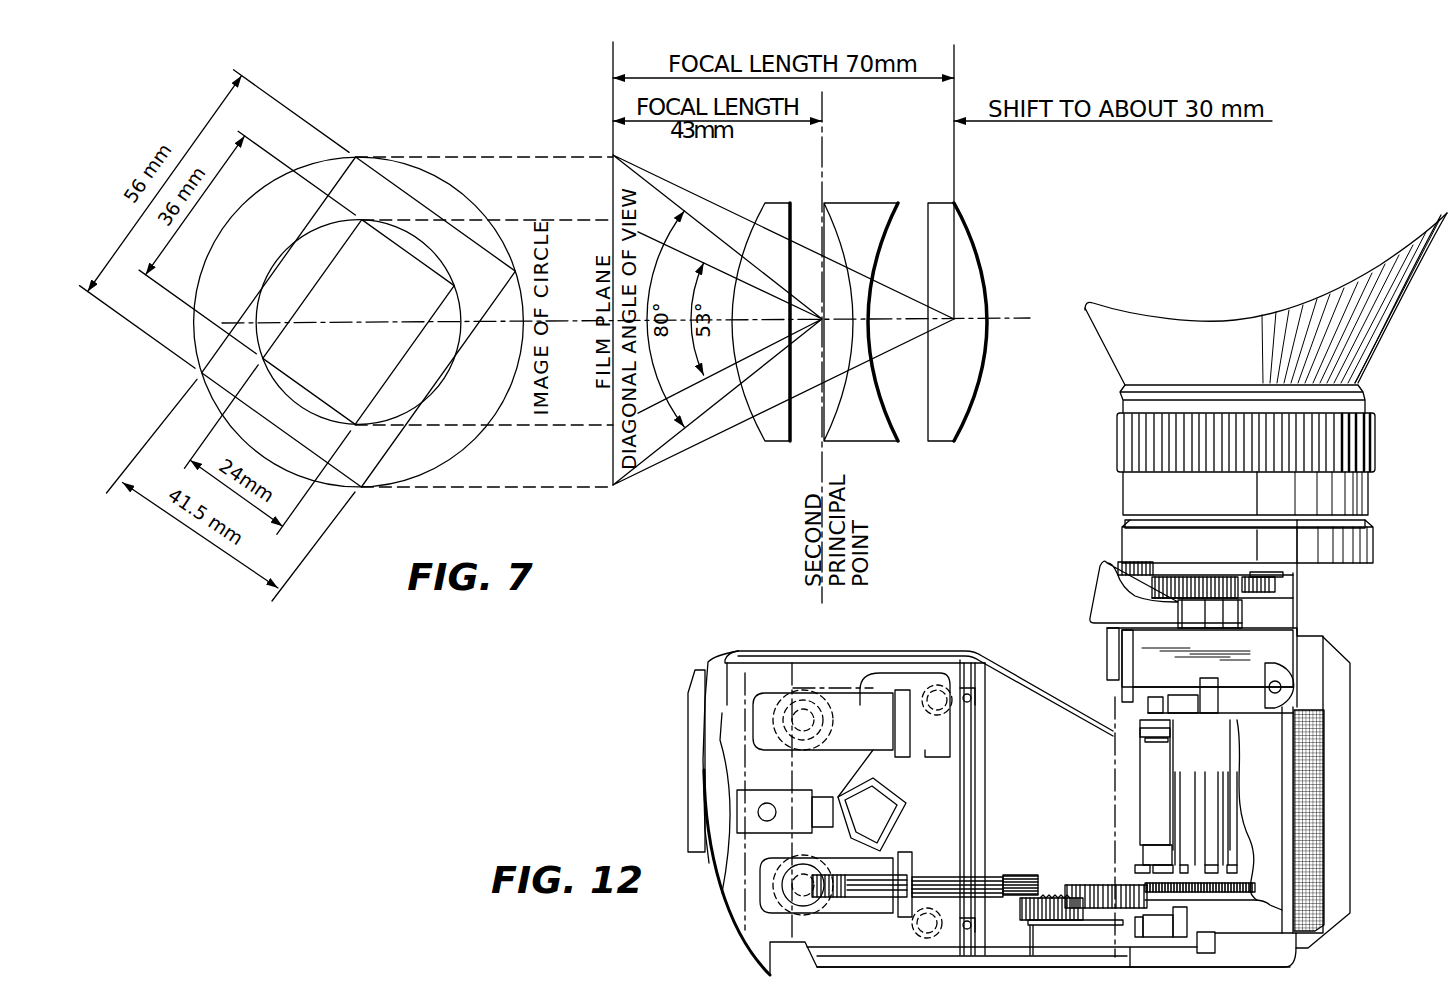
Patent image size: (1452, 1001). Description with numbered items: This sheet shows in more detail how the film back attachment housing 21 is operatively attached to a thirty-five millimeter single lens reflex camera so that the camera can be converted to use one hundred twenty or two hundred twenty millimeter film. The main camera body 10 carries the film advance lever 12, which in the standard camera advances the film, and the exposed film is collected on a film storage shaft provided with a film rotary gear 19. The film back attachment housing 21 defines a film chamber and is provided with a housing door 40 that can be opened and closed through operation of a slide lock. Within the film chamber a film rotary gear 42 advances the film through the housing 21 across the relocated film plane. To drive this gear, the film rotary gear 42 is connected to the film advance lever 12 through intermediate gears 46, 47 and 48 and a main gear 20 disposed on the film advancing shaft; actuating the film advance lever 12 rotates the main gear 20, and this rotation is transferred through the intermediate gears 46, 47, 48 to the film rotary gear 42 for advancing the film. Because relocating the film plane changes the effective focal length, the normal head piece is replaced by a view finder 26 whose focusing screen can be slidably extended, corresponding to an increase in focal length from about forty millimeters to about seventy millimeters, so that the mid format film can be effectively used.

The main camera body 10 is at (1280, 945).
The film advance lever 12 is at (1090, 579).
The film rotary gear 19 is at (1195, 895).
The main gear 20 is at (1133, 880).
The film back attachment housing 21 is at (888, 651).
The view finder 26 is at (1376, 440).
The housing door 40 is at (708, 878).
The film rotary gear 42 is at (786, 903).
The intermediate gear 46 is at (1107, 908).
The intermediate gear 47 is at (1018, 918).
The intermediate gear 48 is at (870, 883).